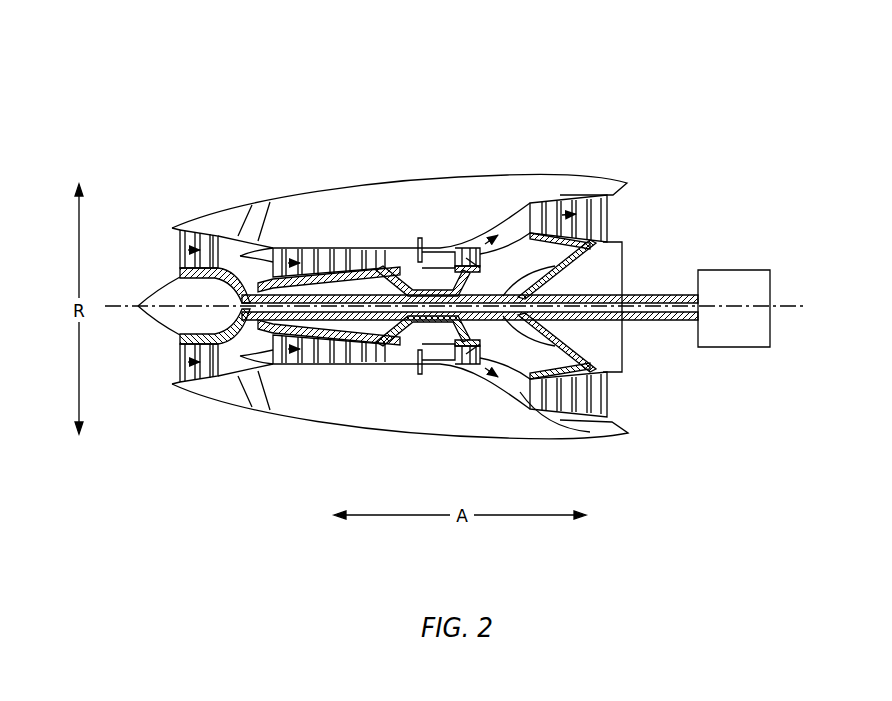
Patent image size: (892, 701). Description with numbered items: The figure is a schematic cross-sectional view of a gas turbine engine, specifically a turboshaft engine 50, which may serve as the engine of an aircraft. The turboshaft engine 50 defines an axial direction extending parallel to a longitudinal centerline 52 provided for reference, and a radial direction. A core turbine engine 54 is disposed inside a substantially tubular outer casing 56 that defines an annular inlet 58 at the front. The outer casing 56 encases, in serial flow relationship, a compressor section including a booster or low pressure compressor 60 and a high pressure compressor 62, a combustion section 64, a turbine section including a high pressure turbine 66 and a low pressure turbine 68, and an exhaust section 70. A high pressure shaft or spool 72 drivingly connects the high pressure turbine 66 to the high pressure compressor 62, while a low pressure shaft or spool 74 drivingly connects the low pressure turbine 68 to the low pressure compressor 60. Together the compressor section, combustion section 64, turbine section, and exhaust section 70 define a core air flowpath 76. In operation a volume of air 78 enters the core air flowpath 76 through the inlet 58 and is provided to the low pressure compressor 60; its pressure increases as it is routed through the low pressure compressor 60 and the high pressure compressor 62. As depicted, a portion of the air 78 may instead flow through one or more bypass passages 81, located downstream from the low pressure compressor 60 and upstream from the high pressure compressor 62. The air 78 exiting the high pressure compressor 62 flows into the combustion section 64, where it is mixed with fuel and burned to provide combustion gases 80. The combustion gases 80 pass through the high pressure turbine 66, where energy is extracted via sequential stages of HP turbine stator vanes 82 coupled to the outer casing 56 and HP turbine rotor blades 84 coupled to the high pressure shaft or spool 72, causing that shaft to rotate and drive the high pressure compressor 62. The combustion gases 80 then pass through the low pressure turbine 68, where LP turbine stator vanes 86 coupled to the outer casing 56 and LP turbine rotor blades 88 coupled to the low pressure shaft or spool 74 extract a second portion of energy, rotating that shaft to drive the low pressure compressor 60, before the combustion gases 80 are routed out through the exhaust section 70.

The turboshaft engine 50 is at (647, 86).
The longitudinal centerline 52 is at (641, 296).
The core turbine engine 54 is at (369, 210).
The outer casing 56 is at (436, 440).
The annular inlet 58 is at (163, 372).
The low pressure compressor 60 is at (240, 326).
The high pressure compressor 62 is at (289, 355).
The combustion section 64 is at (430, 375).
The high pressure turbine 66 is at (542, 368).
The low pressure turbine 68 is at (592, 418).
The exhaust section 70 is at (632, 414).
The high pressure shaft or spool 72 is at (462, 273).
The low pressure shaft or spool 74 is at (550, 278).
The core air flowpath 76 is at (252, 367).
The volume of air 78 is at (182, 247).
The combustion gases 80 is at (557, 210).
The bypass passages 81 is at (258, 212).
The HP turbine stator vanes 82 is at (450, 367).
The HP turbine rotor blades 84 is at (505, 352).
The LP turbine stator vanes 86 is at (526, 400).
The LP turbine rotor blades 88 is at (532, 410).